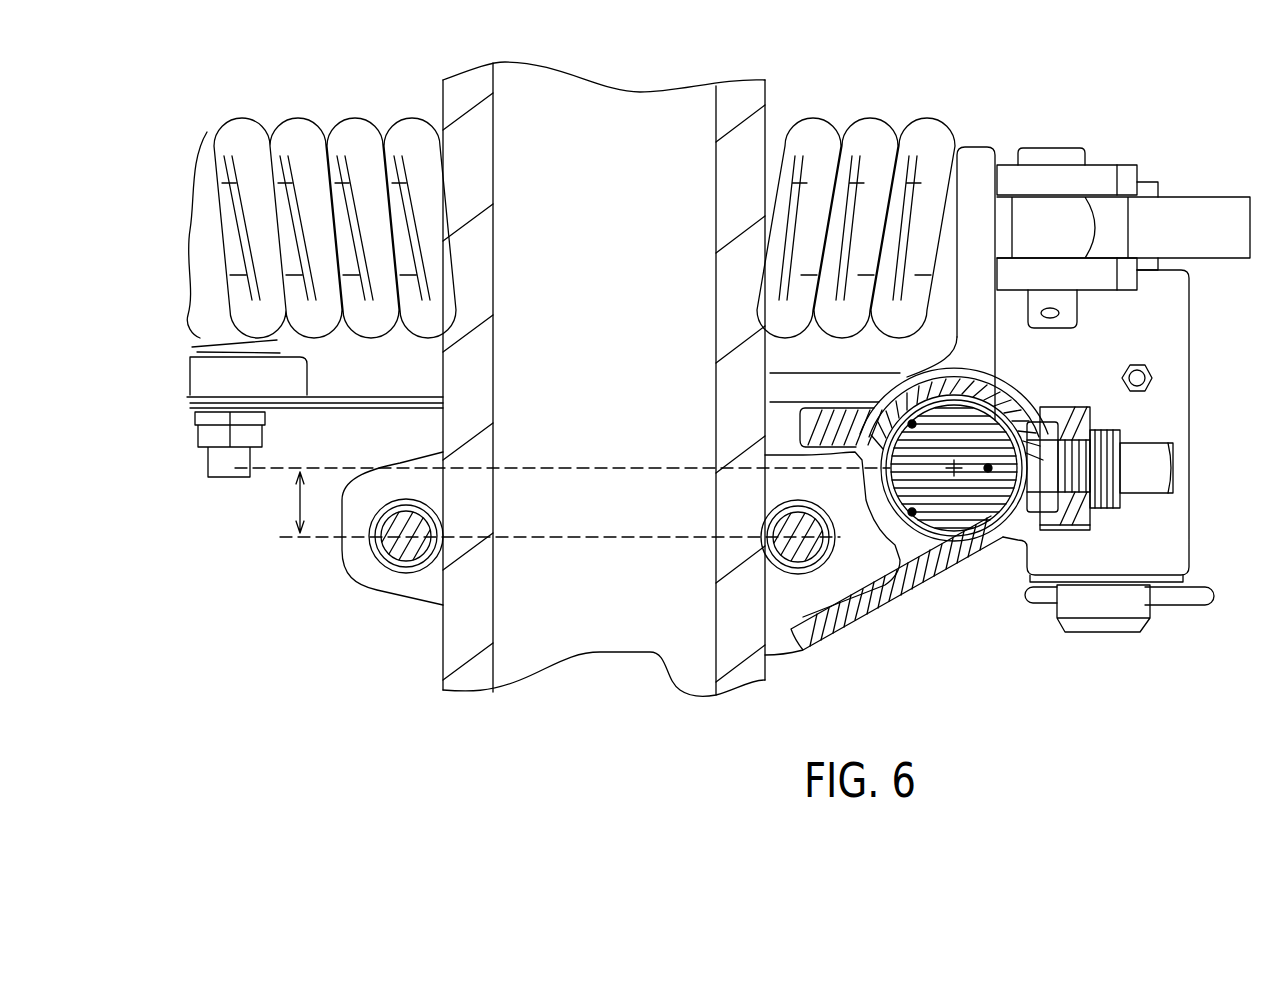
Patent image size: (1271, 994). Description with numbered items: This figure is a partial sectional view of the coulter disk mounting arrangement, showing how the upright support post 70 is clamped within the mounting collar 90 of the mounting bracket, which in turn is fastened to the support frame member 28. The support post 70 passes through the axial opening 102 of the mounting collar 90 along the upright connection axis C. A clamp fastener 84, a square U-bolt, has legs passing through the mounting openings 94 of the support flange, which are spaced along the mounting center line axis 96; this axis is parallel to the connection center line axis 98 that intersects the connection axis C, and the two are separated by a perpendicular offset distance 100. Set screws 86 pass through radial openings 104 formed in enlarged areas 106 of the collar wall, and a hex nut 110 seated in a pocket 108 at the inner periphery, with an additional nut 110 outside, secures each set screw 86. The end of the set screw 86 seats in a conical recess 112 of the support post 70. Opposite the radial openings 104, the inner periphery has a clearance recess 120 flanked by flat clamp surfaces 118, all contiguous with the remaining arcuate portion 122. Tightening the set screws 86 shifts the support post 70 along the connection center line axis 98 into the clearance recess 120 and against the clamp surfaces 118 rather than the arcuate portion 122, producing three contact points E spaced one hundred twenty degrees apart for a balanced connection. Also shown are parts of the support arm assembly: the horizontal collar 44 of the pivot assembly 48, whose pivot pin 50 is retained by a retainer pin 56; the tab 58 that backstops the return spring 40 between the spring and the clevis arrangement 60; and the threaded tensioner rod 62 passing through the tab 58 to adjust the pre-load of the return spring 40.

The support frame member 28 is at (470, 678).
The return spring 40 is at (352, 140).
The collar 44 is at (1173, 555).
The pivot assembly 48 is at (1098, 659).
The pivot pin 50 is at (1125, 632).
The retainer pin 56 is at (1195, 600).
The tab 58 is at (978, 160).
The clevis arrangement 60 is at (1106, 160).
The threaded tensioner rod 62 is at (797, 203).
The support post 70 is at (978, 373).
The clamp fastener 84 is at (392, 566).
The set screws 86 is at (1160, 467).
The mounting collar 90 is at (1025, 385).
The mounting openings 94 is at (415, 566).
The mounting center line axis 96 is at (317, 539).
The connection center line axis 98 is at (335, 466).
The offset distance 100 is at (300, 503).
The axial opening 102 is at (998, 527).
The radial openings 104 is at (1077, 523).
The enlarged areas 106 is at (1080, 420).
The pockets 108 is at (1043, 514).
The hex nut 110 is at (1042, 433).
The recesses 112 is at (957, 422).
The clamp surfaces 118 is at (903, 426).
The clearance recess 120 is at (890, 488).
The arcuate portion 122 is at (1033, 410).
The connection axis C is at (957, 472).
The contact points E is at (909, 420).